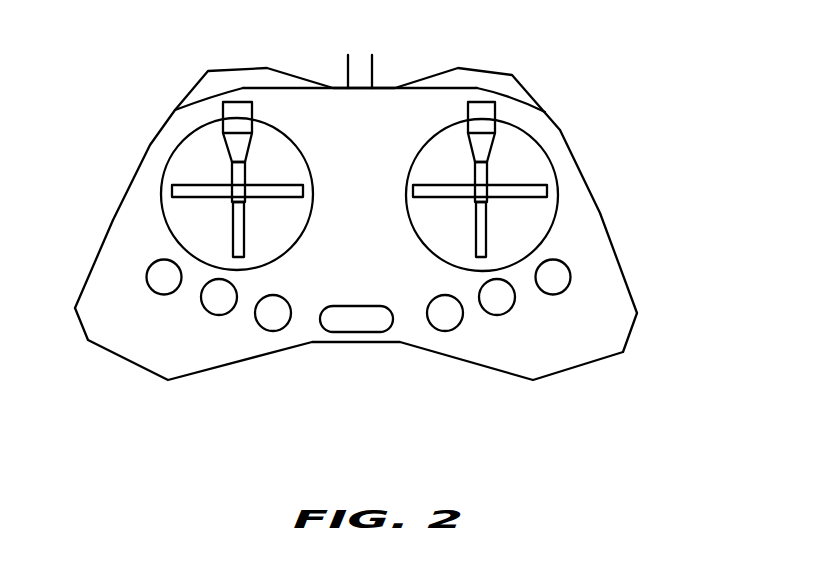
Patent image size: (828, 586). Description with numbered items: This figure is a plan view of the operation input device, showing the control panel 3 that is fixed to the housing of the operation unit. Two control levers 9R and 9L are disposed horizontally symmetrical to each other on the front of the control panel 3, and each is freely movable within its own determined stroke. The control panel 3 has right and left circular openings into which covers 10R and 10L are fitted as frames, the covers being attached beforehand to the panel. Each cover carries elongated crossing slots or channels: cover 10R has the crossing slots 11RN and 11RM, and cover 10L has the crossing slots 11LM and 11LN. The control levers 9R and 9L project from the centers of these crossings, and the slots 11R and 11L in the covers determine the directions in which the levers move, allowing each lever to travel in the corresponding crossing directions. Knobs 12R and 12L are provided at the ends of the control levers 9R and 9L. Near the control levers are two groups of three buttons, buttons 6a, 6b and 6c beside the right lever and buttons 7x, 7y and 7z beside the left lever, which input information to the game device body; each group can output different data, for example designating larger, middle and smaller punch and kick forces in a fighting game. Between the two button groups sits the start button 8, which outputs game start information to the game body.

The control panel 3 is at (580, 342).
The button 6a is at (571, 275).
The button 6b is at (492, 313).
The button 6c is at (433, 327).
The button 7x is at (268, 330).
The button 7y is at (213, 314).
The button 7z is at (148, 270).
The start button 8 is at (345, 332).
The control lever 9L is at (228, 173).
The control lever 9R is at (490, 168).
The cover 10L is at (272, 130).
The cover 10R is at (445, 128).
The slot 11L is at (221, 187).
The crossing slot 11LN is at (298, 184).
The crossing slot 11LM is at (245, 223).
The slot 11R is at (576, 220).
The crossing slot 11RN is at (525, 184).
The crossing slot 11RM is at (490, 238).
The knob 12L is at (242, 100).
The knob 12R is at (482, 100).